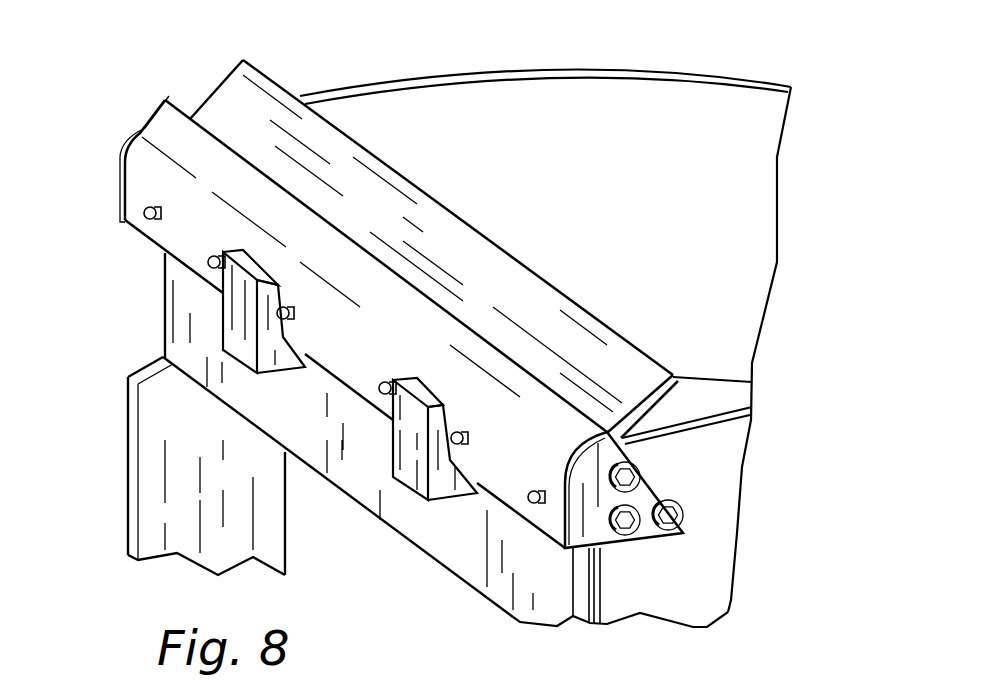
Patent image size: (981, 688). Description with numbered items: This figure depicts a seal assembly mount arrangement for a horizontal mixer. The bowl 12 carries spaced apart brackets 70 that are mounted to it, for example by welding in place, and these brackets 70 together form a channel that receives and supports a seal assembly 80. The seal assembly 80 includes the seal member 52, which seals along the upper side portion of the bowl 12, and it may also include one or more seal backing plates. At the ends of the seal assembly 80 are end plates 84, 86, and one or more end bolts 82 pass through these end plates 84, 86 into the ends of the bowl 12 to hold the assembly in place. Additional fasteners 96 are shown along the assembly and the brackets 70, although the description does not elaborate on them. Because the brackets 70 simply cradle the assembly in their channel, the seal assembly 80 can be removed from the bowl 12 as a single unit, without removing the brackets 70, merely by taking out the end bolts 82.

The bowl 12 is at (303, 413).
The seal member 52 is at (315, 162).
The brackets 70 is at (240, 336).
The seal assembly 80 is at (167, 97).
The end bolts 82 is at (676, 510).
The end plate 84 is at (593, 528).
The end plate 86 is at (122, 180).
The fasteners 96 is at (146, 218).